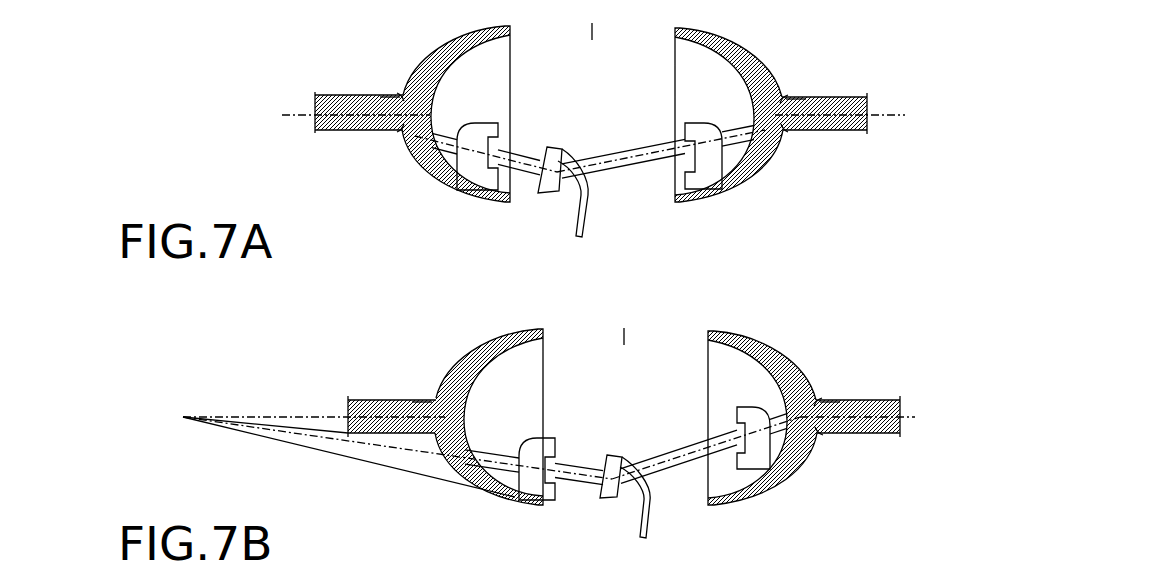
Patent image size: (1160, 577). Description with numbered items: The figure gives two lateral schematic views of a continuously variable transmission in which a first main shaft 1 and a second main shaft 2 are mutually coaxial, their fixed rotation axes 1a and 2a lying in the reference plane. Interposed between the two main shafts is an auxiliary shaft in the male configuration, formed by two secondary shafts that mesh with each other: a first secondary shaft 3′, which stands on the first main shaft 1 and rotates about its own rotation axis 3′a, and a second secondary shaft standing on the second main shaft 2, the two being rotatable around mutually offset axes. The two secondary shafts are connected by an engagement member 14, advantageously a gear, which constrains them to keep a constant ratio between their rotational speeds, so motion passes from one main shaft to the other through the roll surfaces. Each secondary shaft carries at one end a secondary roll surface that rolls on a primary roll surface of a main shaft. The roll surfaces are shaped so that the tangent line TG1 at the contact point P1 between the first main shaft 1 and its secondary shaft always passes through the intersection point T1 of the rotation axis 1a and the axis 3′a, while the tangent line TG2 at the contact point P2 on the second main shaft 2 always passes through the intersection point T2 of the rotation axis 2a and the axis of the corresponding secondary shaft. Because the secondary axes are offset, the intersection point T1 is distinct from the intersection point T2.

In FIG. 7A, the first main shaft 1 is at (406, 116).
In FIG. 7B, the first main shaft 1 is at (439, 419).
In FIG. 7A, the rotation axis of the first main shaft 1a is at (357, 74).
In FIG. 7B, the rotation axis of the first main shaft 1a is at (390, 370).
In FIG. 7A, the intersection point T1 is at (354, 144).
In FIG. 7B, the intersection point T1 is at (314, 383).
In FIG. 7A, the tangent line TG1 is at (358, 153).
In FIG. 7B, the tangent line TG1 is at (349, 480).
In FIG. 7A, the contact point P1 is at (413, 134).
In FIG. 7B, the contact point P1 is at (446, 444).
In FIG. 7A, the rotation axis of the first secondary shaft 3′a is at (465, 134).
In FIG. 7B, the rotation axis of the first secondary shaft 3′a is at (510, 444).
In FIG. 7A, the first secondary shaft 3′ is at (494, 126).
In FIG. 7B, the first secondary shaft 3′ is at (397, 435).
In FIG. 7A, the engagement member 14 is at (534, 199).
In FIG. 7B, the engagement member 14 is at (604, 511).
In FIG. 7A, the contact point P2 is at (772, 137).
In FIG. 7B, the contact point P2 is at (806, 421).
In FIG. 7A, the second main shaft 2 is at (775, 118).
In FIG. 7B, the second main shaft 2 is at (808, 421).
In FIG. 7A, the rotation axis of the second main shaft 2a is at (820, 74).
In FIG. 7B, the rotation axis of the second main shaft 2a is at (853, 377).
In FIG. 7A, the intersection point T2 is at (840, 149).
In FIG. 7B, the intersection point T2 is at (857, 364).
In FIG. 7A, the tangent line TG2 is at (824, 158).
In FIG. 7B, the tangent line TG2 is at (842, 441).